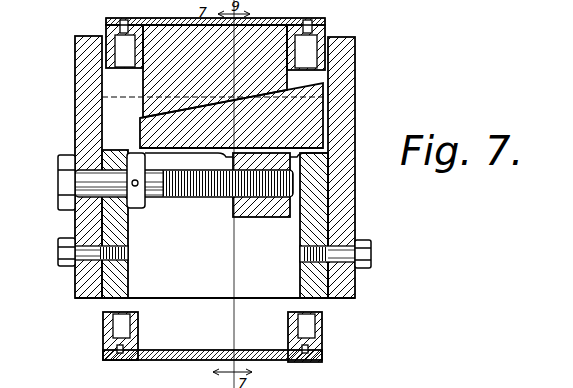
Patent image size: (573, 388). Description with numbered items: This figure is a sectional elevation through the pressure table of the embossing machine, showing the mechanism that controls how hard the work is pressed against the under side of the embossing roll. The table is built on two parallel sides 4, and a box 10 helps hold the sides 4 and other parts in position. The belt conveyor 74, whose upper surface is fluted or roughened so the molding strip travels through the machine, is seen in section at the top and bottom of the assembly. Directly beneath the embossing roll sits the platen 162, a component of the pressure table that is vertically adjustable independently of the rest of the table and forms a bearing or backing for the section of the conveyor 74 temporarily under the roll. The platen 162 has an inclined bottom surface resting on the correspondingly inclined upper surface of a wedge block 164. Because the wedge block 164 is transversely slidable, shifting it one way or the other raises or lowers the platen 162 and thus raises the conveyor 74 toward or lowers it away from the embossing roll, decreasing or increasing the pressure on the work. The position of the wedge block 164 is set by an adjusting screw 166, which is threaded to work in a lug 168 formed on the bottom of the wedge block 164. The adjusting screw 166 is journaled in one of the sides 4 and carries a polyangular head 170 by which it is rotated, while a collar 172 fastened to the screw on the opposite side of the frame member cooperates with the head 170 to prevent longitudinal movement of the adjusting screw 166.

The parallel sides 4 is at (80, 107).
The box 10 is at (118, 230).
The belt conveyor 74 is at (122, 52).
The platen 162 is at (157, 73).
The wedge block 164 is at (345, 122).
The adjusting screw 166 is at (203, 198).
The lug 168 is at (273, 216).
The polyangular head 170 is at (67, 200).
The collar 172 is at (148, 173).